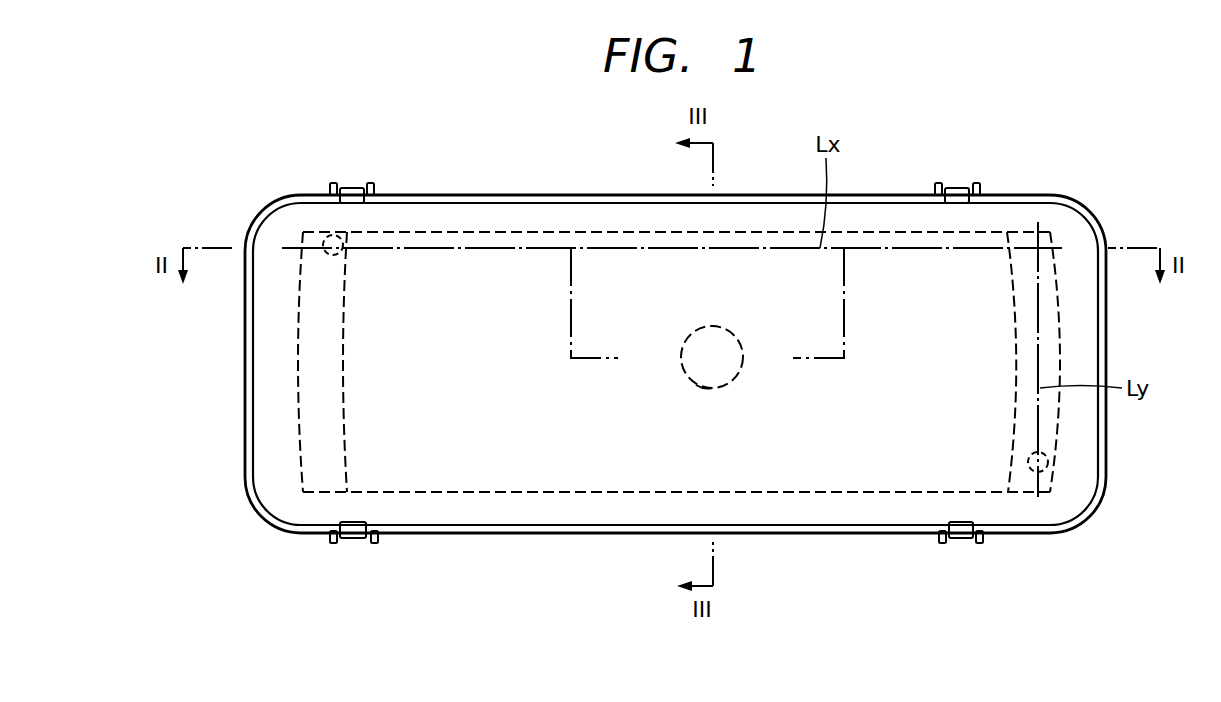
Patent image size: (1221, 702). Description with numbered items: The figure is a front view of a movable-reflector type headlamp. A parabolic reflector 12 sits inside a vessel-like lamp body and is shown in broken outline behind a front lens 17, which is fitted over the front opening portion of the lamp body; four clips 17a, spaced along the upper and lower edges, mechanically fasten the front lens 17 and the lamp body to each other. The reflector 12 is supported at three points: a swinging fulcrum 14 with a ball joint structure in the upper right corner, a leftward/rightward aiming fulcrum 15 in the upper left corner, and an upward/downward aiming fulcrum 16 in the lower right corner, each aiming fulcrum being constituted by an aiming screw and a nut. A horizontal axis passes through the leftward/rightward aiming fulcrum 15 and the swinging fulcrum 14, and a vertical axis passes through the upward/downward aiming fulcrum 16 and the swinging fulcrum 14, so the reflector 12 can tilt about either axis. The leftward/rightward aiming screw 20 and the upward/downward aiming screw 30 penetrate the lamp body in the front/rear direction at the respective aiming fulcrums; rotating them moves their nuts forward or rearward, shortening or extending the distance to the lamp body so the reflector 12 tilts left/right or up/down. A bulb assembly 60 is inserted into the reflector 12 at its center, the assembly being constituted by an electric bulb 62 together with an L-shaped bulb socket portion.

The parabolic reflector 12 is at (519, 232).
The swinging fulcrum 14 is at (1056, 228).
The leftward/rightward aiming fulcrum 15 is at (327, 224).
The upward/downward aiming fulcrum 16 is at (1058, 462).
The front lens 17 is at (592, 510).
The clips 17a is at (352, 190).
The leftward/rightward aiming screw 20 is at (294, 192).
The upward/downward aiming screw 30 is at (1114, 462).
The bulb assembly 60 is at (742, 385).
The electric bulb 62 is at (702, 387).